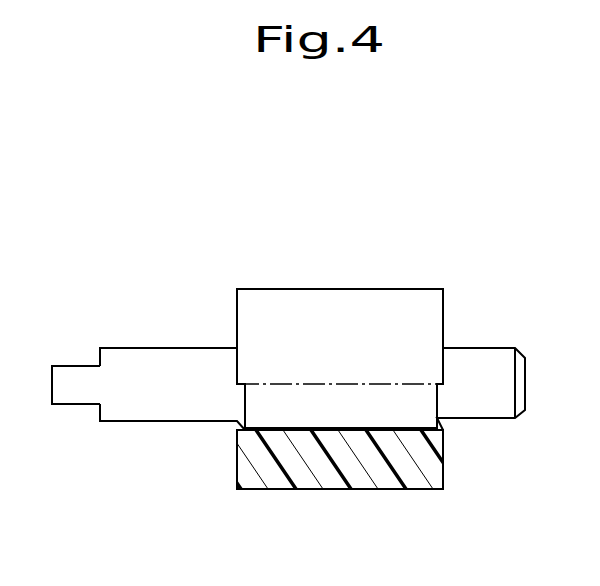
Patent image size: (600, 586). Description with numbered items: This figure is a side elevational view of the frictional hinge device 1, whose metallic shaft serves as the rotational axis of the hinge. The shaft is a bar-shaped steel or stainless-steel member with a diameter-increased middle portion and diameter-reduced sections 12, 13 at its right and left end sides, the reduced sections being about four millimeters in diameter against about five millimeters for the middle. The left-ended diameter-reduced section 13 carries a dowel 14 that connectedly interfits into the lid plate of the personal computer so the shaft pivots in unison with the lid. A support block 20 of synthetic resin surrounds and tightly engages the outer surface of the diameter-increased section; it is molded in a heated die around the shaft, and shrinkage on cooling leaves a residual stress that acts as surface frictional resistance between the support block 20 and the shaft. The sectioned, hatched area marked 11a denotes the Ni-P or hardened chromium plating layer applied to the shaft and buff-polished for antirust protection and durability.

The frictional hinge device 1 is at (261, 246).
The plating layer 11a is at (347, 415).
The diameter-reduced section 12 is at (477, 356).
The diameter-reduced section 13 is at (175, 358).
The dowel 14 is at (73, 376).
The support block 20 is at (392, 300).